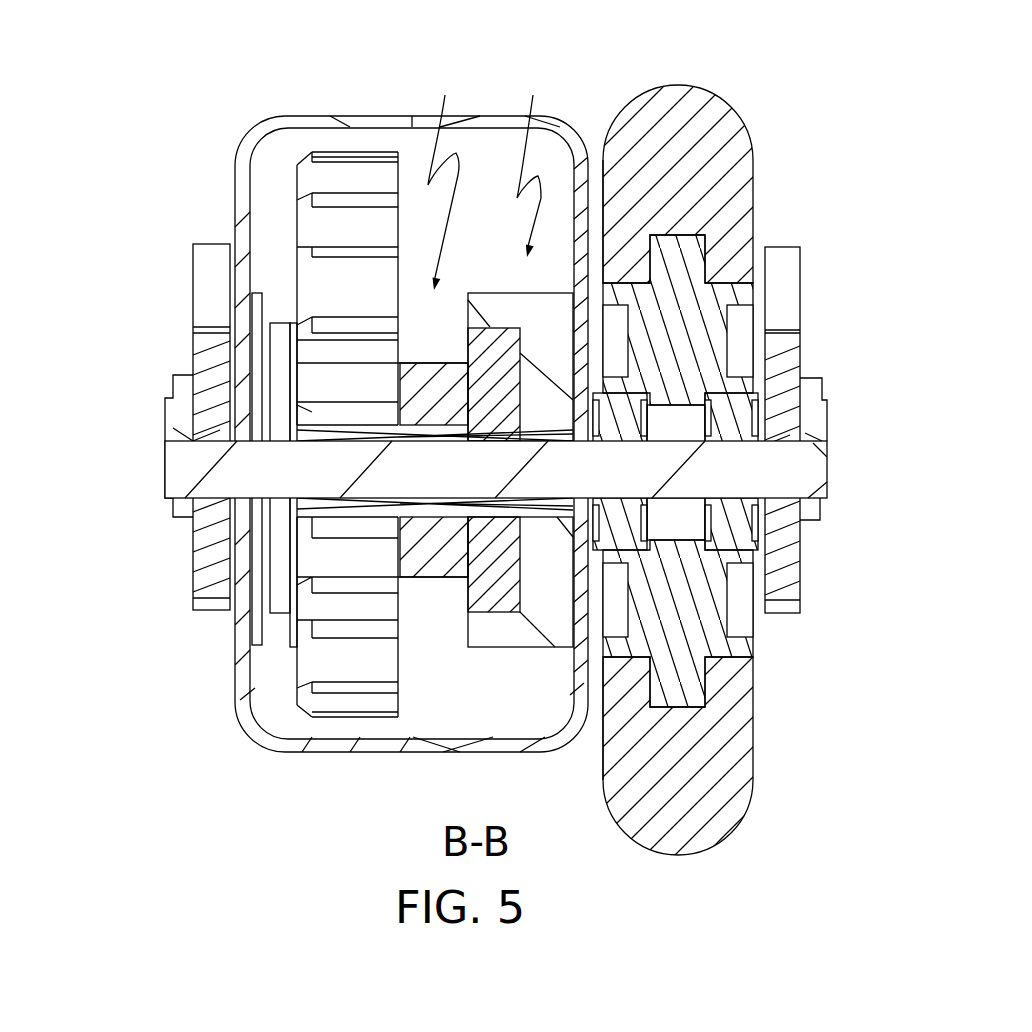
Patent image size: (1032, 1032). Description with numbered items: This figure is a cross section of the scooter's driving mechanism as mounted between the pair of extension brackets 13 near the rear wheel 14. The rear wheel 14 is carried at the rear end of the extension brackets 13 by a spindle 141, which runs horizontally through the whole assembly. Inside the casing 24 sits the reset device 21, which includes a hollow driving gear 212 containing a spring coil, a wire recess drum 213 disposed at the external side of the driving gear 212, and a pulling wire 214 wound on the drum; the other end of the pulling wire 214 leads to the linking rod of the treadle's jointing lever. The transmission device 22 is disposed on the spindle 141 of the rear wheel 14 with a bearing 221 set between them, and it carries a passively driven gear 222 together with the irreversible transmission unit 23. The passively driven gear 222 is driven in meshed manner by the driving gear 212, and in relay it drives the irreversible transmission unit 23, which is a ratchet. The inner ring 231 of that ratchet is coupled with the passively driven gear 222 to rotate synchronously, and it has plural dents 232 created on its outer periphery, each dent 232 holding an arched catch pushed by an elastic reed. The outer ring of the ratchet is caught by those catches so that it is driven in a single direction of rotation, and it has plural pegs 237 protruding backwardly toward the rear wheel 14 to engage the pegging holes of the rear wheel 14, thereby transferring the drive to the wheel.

The extension brackets 13 is at (213, 287).
The rear wheel 14 is at (720, 175).
The spindle 141 is at (805, 468).
The reset device 21 is at (369, 421).
The transmission device 22 is at (442, 167).
The irreversible transmission unit 23 is at (531, 148).
The casing 24 is at (335, 118).
The hollow driving gear 212 is at (325, 232).
The wire recess drum 213 is at (283, 548).
The pulling wire 214 is at (265, 372).
The bearing 221 is at (305, 432).
The passively driven gear 222 is at (425, 540).
The inner ring 231 is at (482, 590).
The dents 232 is at (518, 627).
The pegs 237 is at (592, 343).